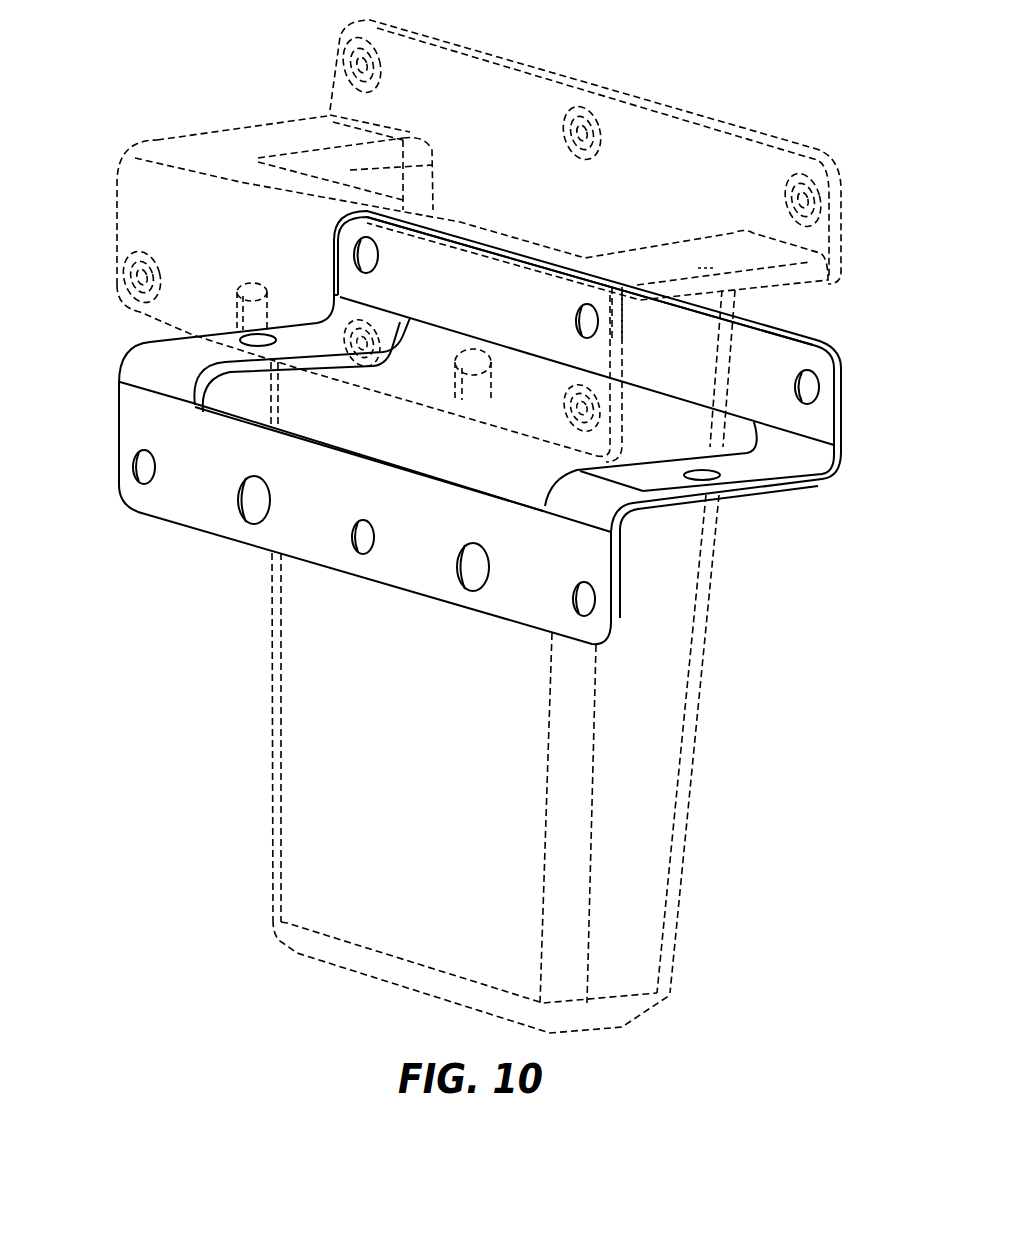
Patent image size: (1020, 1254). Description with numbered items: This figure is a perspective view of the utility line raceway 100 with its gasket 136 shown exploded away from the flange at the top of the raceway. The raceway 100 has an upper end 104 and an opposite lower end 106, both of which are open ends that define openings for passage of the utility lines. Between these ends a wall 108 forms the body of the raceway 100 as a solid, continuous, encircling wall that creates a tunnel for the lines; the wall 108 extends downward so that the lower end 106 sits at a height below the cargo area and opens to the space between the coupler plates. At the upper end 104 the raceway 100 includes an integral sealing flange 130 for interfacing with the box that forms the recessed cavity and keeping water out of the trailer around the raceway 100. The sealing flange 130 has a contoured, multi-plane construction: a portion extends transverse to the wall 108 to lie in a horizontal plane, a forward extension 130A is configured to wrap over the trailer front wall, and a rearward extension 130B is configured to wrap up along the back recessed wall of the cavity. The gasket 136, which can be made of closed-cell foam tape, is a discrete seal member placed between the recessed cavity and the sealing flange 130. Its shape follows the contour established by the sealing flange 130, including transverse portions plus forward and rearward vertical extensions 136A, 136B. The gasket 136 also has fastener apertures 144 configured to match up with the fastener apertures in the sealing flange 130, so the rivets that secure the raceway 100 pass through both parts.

The utility line raceway 100 is at (202, 62).
The upper end 104 is at (352, 162).
The lower end 106 is at (609, 1038).
The wall 108 is at (650, 712).
The sealing flange 130 is at (218, 140).
The forward extension 130A is at (140, 218).
The rearward extension 130B is at (673, 150).
The gasket 136 is at (777, 482).
The forward vertical extension 136A is at (200, 505).
The rearward vertical extension 136B is at (767, 360).
The fastener apertures 144 is at (819, 388).